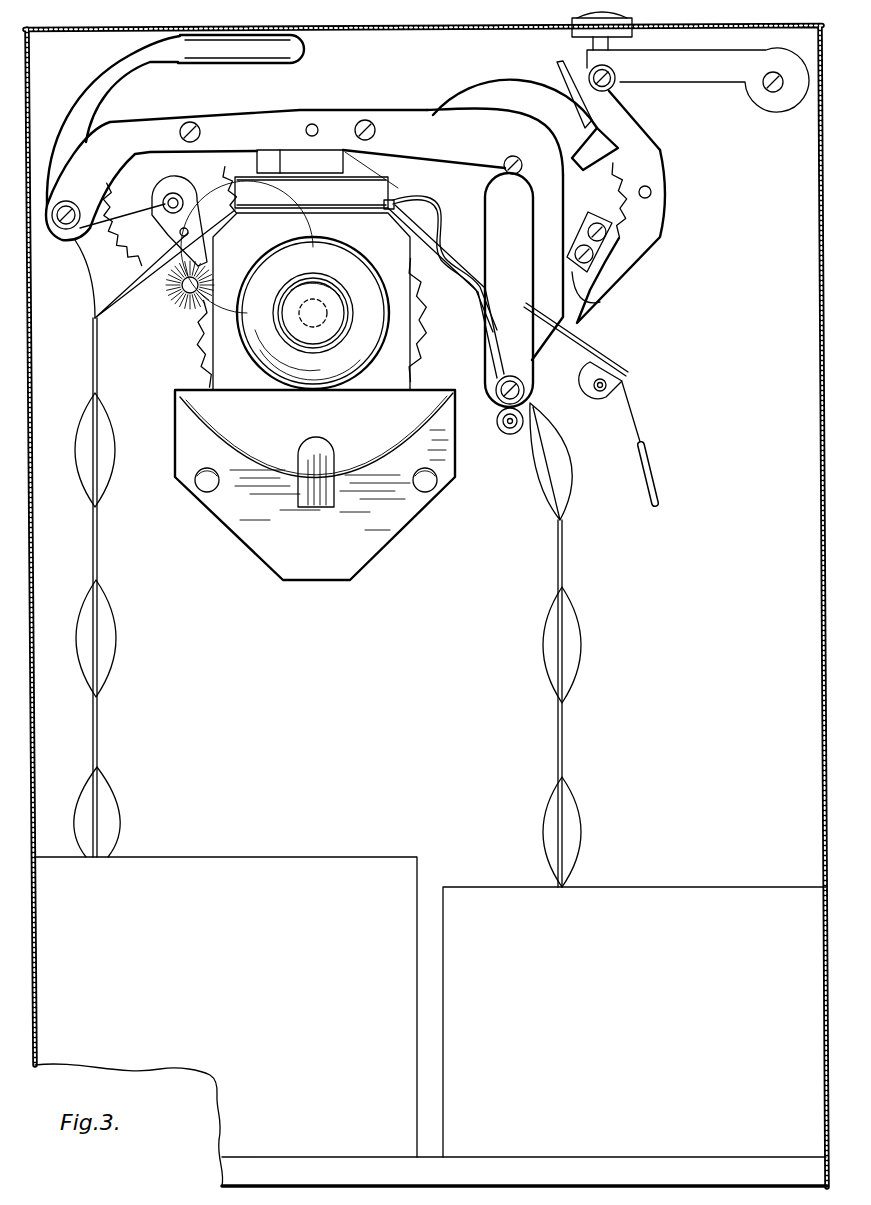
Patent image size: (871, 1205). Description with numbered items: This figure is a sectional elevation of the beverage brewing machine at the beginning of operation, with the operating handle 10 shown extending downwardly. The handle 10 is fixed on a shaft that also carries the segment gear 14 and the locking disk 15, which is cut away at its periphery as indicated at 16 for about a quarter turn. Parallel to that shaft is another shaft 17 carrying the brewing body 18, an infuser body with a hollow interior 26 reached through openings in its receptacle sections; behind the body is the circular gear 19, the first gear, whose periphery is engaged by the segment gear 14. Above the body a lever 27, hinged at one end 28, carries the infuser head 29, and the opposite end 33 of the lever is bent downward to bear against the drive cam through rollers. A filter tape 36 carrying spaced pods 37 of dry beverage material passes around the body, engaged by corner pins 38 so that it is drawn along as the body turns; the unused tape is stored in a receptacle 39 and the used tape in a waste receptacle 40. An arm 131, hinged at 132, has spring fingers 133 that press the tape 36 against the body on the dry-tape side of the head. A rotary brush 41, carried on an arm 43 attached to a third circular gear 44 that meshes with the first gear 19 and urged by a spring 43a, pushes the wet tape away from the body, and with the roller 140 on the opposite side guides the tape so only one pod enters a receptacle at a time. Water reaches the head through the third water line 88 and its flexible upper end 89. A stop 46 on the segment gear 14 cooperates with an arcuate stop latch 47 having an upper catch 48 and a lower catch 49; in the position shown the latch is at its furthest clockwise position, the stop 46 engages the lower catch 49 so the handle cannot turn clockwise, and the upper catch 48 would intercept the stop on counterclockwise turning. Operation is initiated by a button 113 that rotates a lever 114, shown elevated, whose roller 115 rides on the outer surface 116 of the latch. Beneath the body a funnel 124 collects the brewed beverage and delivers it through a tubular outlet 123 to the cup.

The operating handle 10 is at (519, 272).
The segment gear 14 is at (588, 203).
The locking disk 15 is at (473, 99).
The cut-away periphery 16 is at (582, 147).
The shaft 17 is at (333, 318).
The brewing body 18 is at (404, 266).
The circular gear 19 is at (200, 327).
The hollow interior 26 is at (300, 280).
The lever 27 is at (280, 104).
The hinged end 28 is at (58, 233).
The infuser head 29 is at (325, 205).
The lever end 33 is at (560, 242).
The tape 36 is at (98, 560).
The pods 37 is at (556, 458).
The corner pins 38 is at (407, 207).
The receptacle 39 is at (675, 940).
The receptacle 40 is at (233, 959).
The rotary brush 41 is at (185, 305).
The arm 43 is at (168, 228).
The spring 43a is at (67, 279).
The third circular gear 44 is at (118, 232).
The stop 46 is at (593, 219).
The stop latch 47 is at (653, 218).
The upper catch 48 is at (556, 70).
The lower catch 49 is at (599, 302).
The third water line 88 is at (288, 62).
The flexible upper end 89 is at (87, 100).
The button 113 is at (620, 12).
The lever 114 is at (699, 72).
The roller 115 is at (616, 74).
The outer surface 116 is at (648, 134).
The tubular outlet 123 is at (292, 498).
The funnel 124 is at (370, 467).
The arm 131 is at (568, 350).
The hinge mount 132 is at (599, 392).
The spring fingers 133 is at (430, 205).
The roller 140 is at (503, 428).